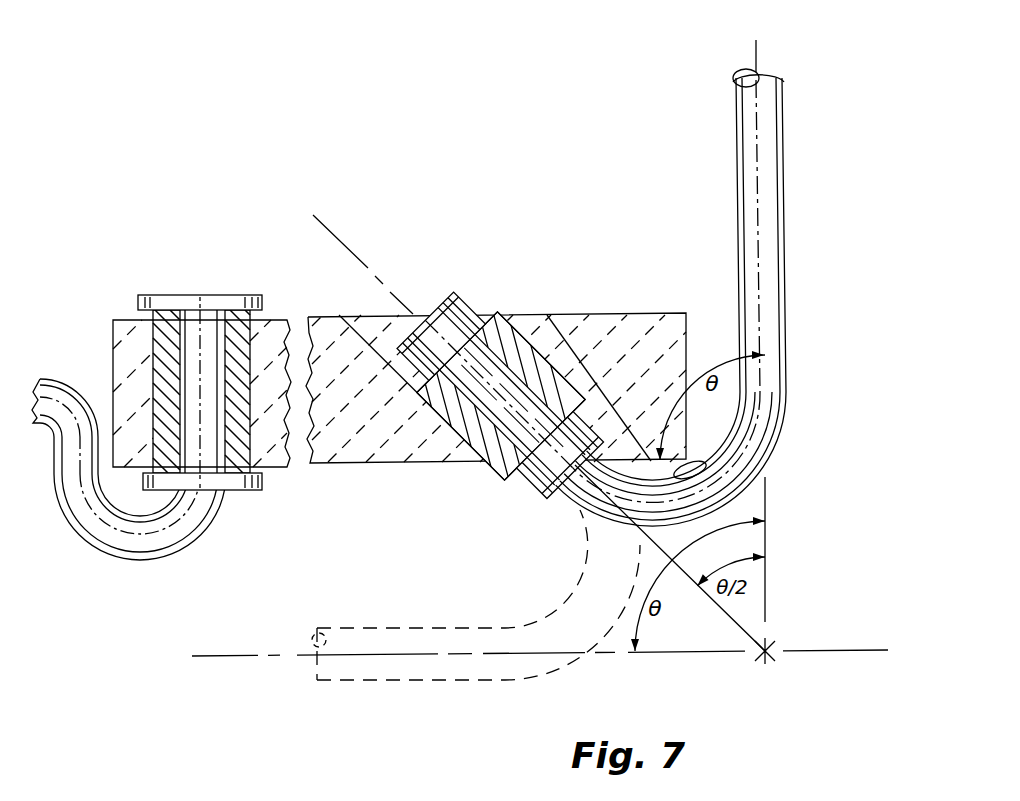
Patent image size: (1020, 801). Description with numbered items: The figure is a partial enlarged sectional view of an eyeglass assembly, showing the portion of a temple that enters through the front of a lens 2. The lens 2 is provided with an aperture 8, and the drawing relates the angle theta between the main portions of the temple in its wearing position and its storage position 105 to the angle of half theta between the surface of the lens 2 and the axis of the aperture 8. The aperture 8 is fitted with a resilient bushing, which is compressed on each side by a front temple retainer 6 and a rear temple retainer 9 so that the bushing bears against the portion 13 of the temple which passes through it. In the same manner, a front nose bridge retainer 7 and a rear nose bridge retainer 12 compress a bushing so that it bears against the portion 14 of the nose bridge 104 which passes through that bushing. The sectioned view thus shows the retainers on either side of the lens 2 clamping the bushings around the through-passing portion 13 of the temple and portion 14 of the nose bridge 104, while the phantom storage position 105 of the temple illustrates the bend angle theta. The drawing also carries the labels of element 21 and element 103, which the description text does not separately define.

The lens 2 is at (341, 441).
The front temple retainer 6 is at (544, 486).
The front nose bridge retainer 7 is at (242, 488).
The aperture 8 is at (143, 352).
The rear temple retainer 9 is at (440, 322).
The rear nose bridge retainer 12 is at (188, 304).
The portion of temple 13 is at (523, 431).
The portion of nose bridge 14 is at (203, 340).
The bent tube 21 is at (806, 243).
The bend portion of tube 103 is at (673, 480).
The nose bridge 104 is at (97, 533).
The storage position of temple 105 is at (368, 626).